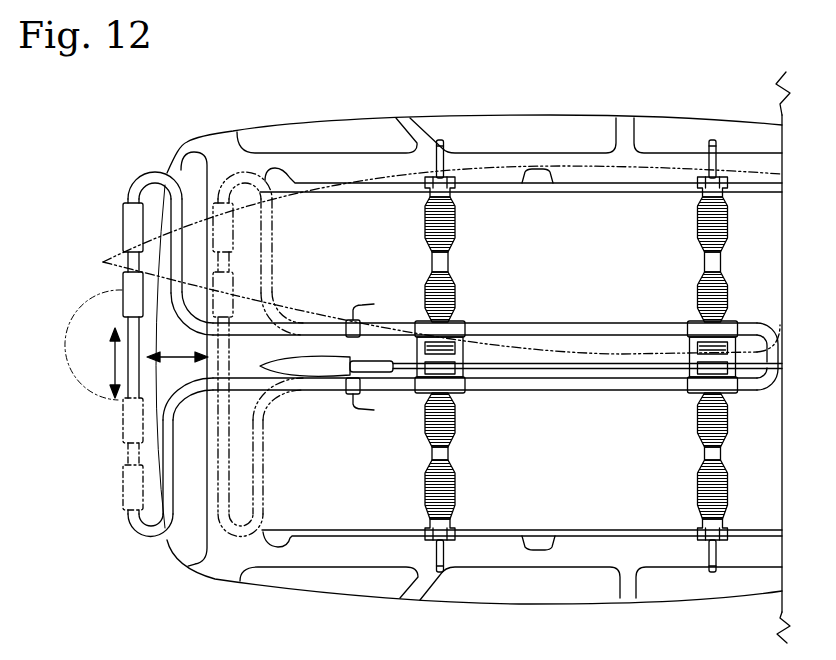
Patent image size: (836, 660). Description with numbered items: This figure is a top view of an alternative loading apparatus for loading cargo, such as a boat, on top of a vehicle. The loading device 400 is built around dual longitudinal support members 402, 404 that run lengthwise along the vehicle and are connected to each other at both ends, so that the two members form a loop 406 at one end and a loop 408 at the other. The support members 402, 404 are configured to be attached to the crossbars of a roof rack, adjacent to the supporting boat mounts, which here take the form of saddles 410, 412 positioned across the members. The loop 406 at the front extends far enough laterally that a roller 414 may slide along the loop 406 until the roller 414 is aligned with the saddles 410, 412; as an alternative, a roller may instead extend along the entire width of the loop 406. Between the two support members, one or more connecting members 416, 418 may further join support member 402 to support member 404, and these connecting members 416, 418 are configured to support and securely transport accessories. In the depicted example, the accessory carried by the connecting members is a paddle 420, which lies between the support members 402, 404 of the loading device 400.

The loading device 400 is at (80, 410).
The longitudinal support member 402 is at (543, 320).
The longitudinal support member 404 is at (527, 393).
The loop 406 is at (160, 540).
The loop 408 is at (772, 392).
The saddle 410 is at (457, 237).
The saddle 412 is at (697, 290).
The roller 414 is at (129, 363).
The connecting member 416 is at (465, 350).
The connecting member 418 is at (738, 343).
The paddle 420 is at (308, 374).